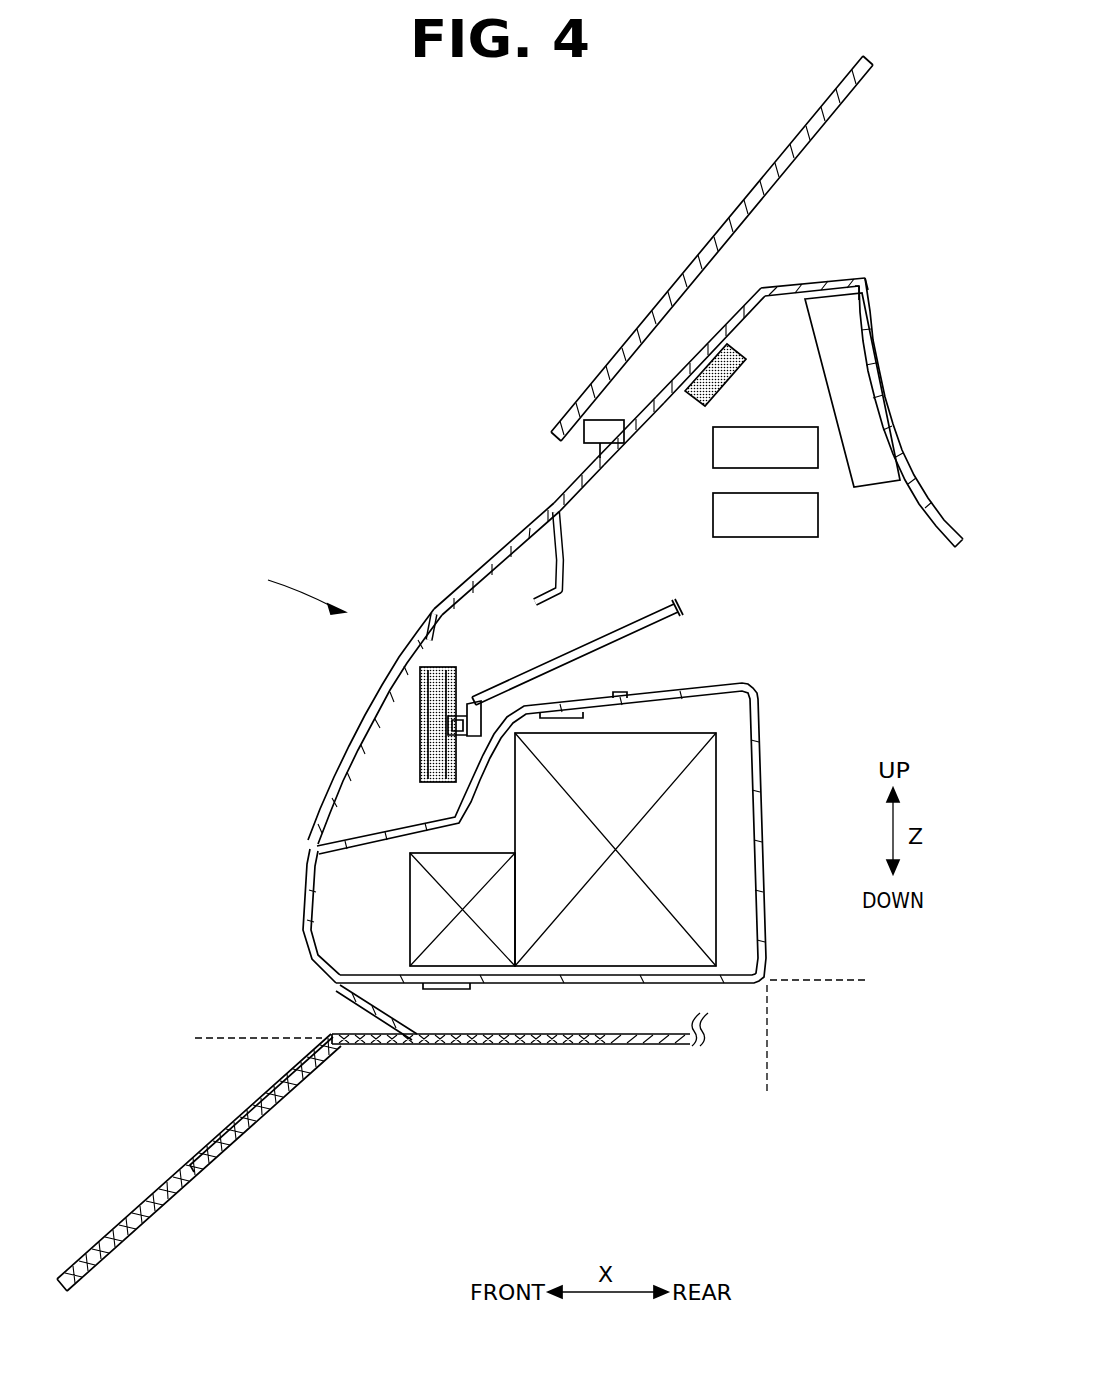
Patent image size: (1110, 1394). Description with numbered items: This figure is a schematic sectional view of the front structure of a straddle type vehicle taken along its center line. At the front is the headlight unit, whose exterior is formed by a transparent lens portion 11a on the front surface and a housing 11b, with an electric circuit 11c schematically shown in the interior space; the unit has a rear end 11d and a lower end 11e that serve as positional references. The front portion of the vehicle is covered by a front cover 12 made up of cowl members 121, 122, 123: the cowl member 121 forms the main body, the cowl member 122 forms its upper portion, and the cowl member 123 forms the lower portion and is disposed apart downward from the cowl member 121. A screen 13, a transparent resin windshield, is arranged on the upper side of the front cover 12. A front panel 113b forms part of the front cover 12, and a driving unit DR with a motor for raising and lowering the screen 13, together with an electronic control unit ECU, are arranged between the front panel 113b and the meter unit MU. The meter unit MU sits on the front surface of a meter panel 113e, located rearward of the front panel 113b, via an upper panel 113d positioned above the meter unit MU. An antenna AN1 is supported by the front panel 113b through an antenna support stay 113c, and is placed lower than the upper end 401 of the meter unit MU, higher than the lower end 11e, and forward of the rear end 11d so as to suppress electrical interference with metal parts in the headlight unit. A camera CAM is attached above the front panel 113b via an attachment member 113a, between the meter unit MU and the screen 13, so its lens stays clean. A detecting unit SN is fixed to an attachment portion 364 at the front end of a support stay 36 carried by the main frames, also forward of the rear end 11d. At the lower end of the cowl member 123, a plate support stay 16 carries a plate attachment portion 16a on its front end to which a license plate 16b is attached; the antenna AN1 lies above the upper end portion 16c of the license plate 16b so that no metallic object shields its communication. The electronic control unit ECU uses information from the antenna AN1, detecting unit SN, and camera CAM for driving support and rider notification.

The screen 13 is at (617, 357).
The attachment member 113a is at (607, 455).
The front panel 113b is at (565, 495).
The antenna support stay 113c is at (737, 332).
The upper panel 113d is at (824, 277).
The meter panel 113e is at (913, 494).
The upper end 401 is at (864, 274).
The meter unit MU is at (868, 413).
The antenna AN1 is at (700, 345).
The camera CAM is at (607, 432).
The driving unit DR is at (766, 438).
The electronic control unit ECU is at (725, 512).
The cowl member 122 is at (482, 561).
The cowl member 121 is at (360, 710).
The front cover 12 is at (292, 588).
The support stay 36 is at (633, 622).
The attachment portion 364 is at (474, 712).
The detecting unit SN is at (418, 752).
The lens portion 11a is at (308, 884).
The housing 11b is at (755, 718).
The electric circuit 11c is at (718, 932).
The rear end 11d is at (769, 1081).
The lower end 11e is at (854, 986).
The cowl member 123 is at (342, 997).
The plate support stay 16 is at (510, 1045).
The plate attachment portion 16a is at (267, 1110).
The license plate 16b is at (268, 1088).
The upper end portion 16c is at (207, 1035).